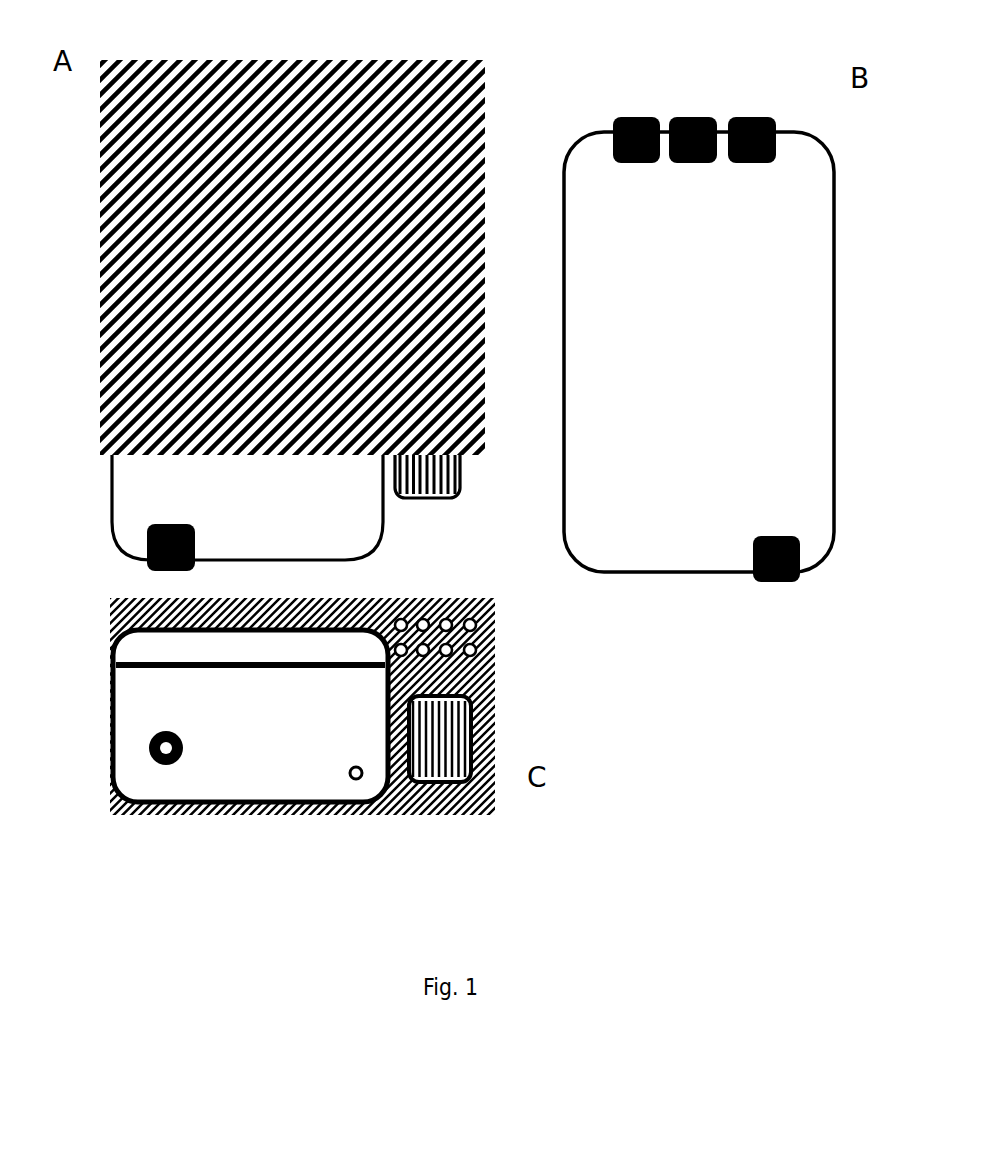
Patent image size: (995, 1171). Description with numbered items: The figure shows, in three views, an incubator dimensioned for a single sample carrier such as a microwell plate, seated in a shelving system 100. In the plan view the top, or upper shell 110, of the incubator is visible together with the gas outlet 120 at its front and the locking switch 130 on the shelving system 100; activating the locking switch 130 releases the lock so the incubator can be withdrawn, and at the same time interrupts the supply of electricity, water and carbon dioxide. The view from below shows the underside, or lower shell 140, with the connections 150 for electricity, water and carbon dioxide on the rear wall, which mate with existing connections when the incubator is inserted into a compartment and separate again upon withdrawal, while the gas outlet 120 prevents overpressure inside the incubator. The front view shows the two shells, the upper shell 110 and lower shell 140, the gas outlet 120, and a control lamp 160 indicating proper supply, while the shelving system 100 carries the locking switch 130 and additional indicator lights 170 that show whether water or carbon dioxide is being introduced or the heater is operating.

In FIG. 1A, the shelving system 100 is at (98, 143).
In FIG. 1C, the shelving system 100 is at (100, 603).
In FIG. 1A, the upper shell 110 is at (367, 528).
In FIG. 1C, the upper shell 110 is at (348, 643).
In FIG. 1A, the gas outlet 120 is at (143, 570).
In FIG. 1B, the gas outlet 120 is at (775, 592).
In FIG. 1C, the gas outlet 120 is at (142, 745).
In FIG. 1A, the locking switch 130 is at (467, 480).
In FIG. 1C, the locking switch 130 is at (458, 733).
In FIG. 1B, the lower shell 140 is at (800, 273).
In FIG. 1C, the lower shell 140 is at (282, 778).
In FIG. 1B, the connections 150 is at (625, 108).
In FIG. 1C, the control lamp 160 is at (355, 787).
In FIG. 1C, the indicator lights 170 is at (493, 623).